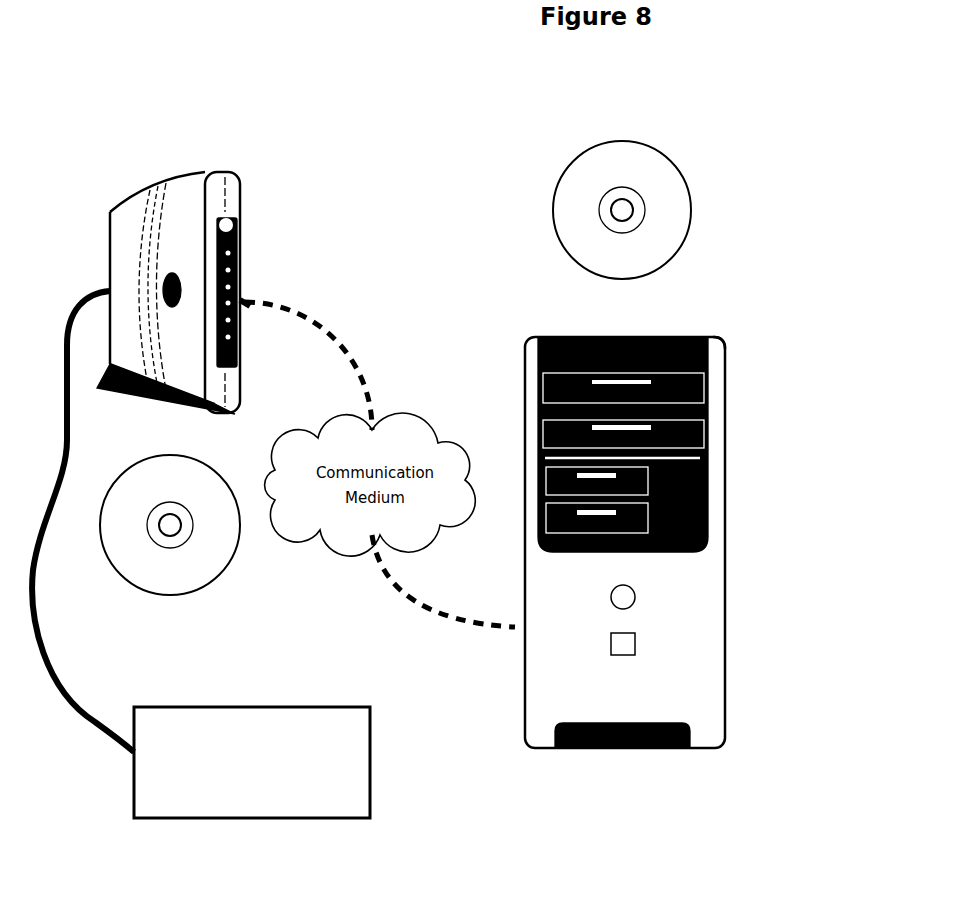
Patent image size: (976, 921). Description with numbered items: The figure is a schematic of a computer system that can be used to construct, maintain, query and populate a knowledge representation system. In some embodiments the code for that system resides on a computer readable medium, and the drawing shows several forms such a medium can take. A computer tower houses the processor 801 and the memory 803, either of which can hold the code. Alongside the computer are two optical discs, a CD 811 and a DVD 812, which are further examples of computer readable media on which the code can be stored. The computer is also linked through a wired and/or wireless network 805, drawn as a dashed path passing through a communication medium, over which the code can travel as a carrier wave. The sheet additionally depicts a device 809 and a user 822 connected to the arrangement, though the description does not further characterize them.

The processor 801 is at (643, 335).
The memory 803 is at (713, 337).
The wired and/or wireless network 805 is at (412, 607).
The imaging device 809 is at (230, 174).
The CD 811 is at (660, 157).
The DVD 812 is at (180, 592).
The user 822 is at (313, 820).